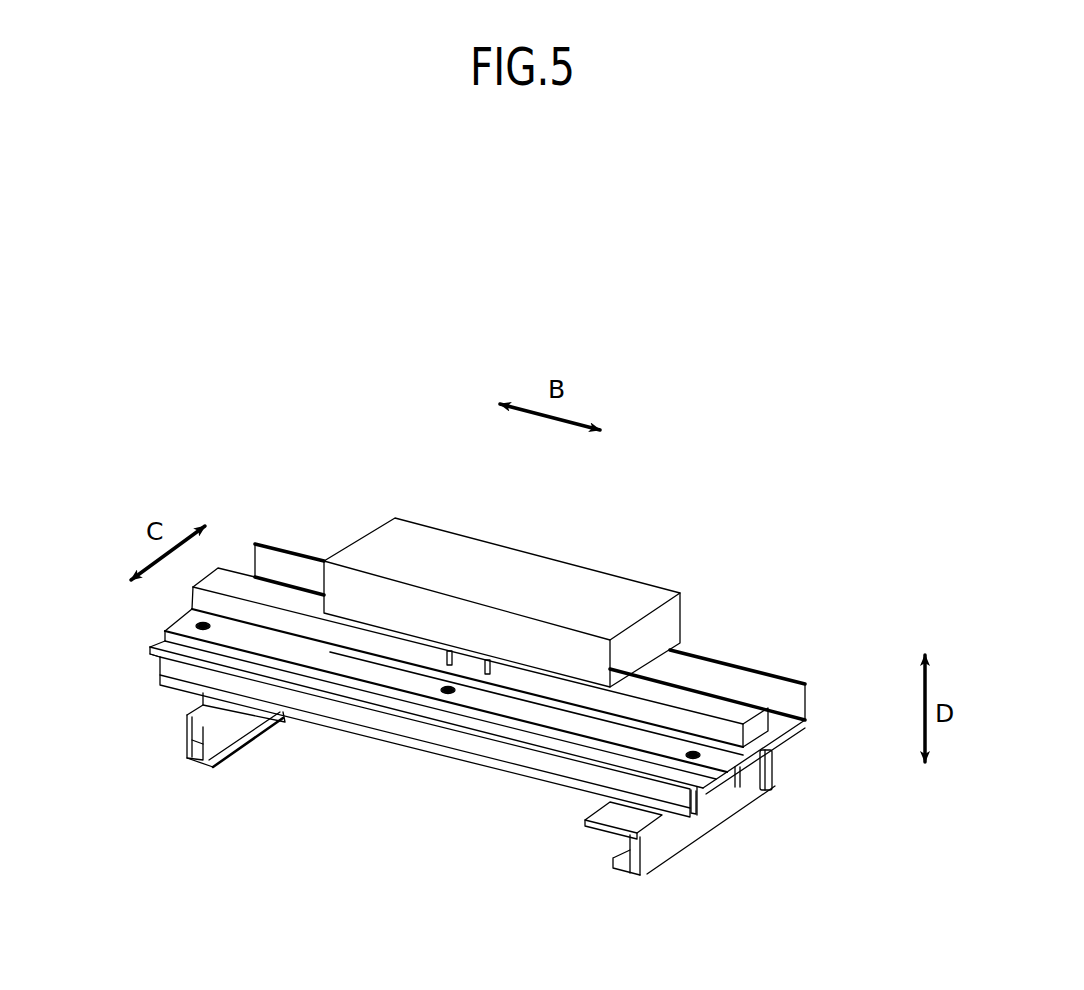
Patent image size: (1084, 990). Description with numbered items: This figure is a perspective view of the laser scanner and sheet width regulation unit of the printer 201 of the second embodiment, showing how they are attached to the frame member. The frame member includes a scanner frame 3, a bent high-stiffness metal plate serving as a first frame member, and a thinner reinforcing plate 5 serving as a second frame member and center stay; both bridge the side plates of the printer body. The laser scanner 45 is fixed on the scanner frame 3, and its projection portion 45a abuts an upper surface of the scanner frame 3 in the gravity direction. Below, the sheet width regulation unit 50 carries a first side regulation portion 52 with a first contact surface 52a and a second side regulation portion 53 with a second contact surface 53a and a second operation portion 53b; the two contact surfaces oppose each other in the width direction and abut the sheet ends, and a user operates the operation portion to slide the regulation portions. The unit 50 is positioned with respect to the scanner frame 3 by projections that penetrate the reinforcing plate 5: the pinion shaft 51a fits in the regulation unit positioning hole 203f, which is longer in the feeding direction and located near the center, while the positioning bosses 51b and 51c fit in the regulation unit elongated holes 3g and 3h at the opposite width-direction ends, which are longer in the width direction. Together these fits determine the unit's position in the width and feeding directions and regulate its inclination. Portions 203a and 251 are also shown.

The printer 201 is at (704, 370).
The reinforcing plate 5 is at (792, 694).
The scanner frame 3 is at (691, 732).
The regulation unit elongated hole 3g is at (197, 625).
The regulation unit elongated hole 3h is at (704, 795).
The laser scanner 45 is at (586, 608).
The projection portion 45a is at (489, 672).
The sheet width regulation unit 50 is at (150, 670).
The pinion shaft 51a is at (448, 697).
The positioning boss 51b is at (203, 623).
The positioning boss 51c is at (688, 818).
The first side regulation portion 52 is at (207, 733).
The first contact surface 52a is at (190, 745).
The second side regulation portion 53 is at (744, 797).
The second contact surface 53a is at (624, 847).
The second operation portion 53b is at (778, 764).
The plate portion 203a is at (566, 728).
The regulation unit positioning hole 203f is at (455, 697).
The lower plate 251 is at (592, 788).